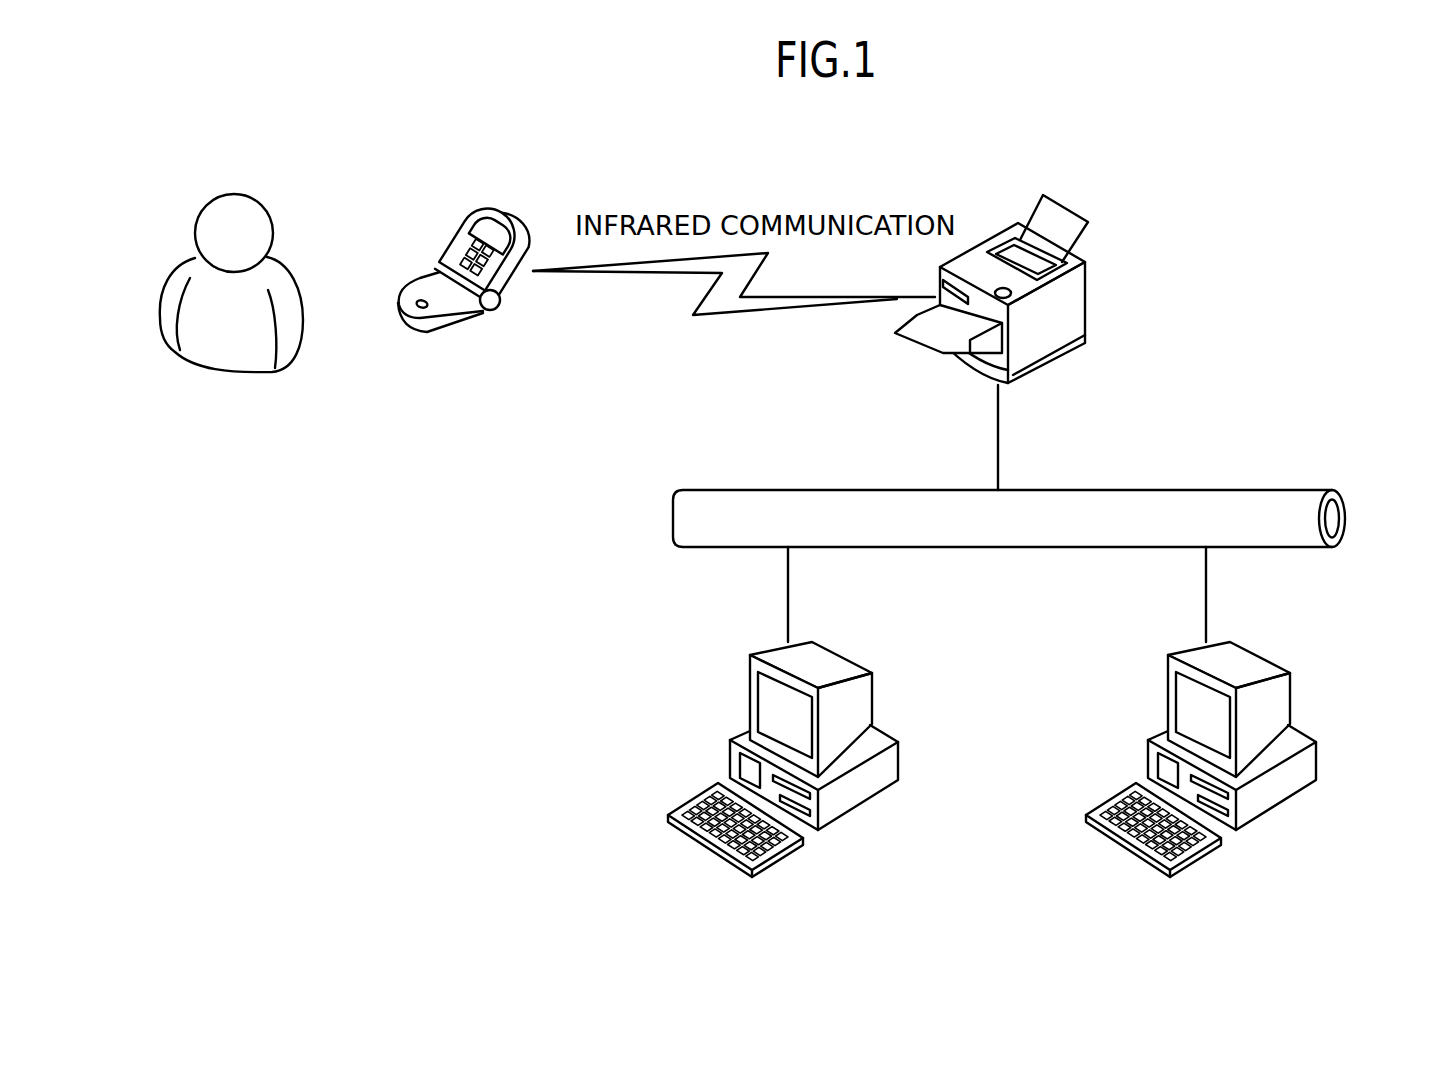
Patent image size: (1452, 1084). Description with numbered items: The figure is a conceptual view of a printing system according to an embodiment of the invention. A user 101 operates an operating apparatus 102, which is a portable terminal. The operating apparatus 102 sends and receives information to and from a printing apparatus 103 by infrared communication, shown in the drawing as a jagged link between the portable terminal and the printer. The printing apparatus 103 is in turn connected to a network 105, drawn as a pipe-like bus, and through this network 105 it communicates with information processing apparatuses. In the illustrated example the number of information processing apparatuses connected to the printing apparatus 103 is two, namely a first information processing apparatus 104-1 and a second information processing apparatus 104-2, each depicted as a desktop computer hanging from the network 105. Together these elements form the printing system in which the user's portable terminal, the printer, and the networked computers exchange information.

The user 101 is at (256, 198).
The operating apparatus 102 is at (518, 210).
The printing apparatus 103 is at (1090, 295).
The information processing apparatus 104-1 is at (872, 688).
The information processing apparatus 104-2 is at (1290, 688).
The network 105 is at (1233, 490).